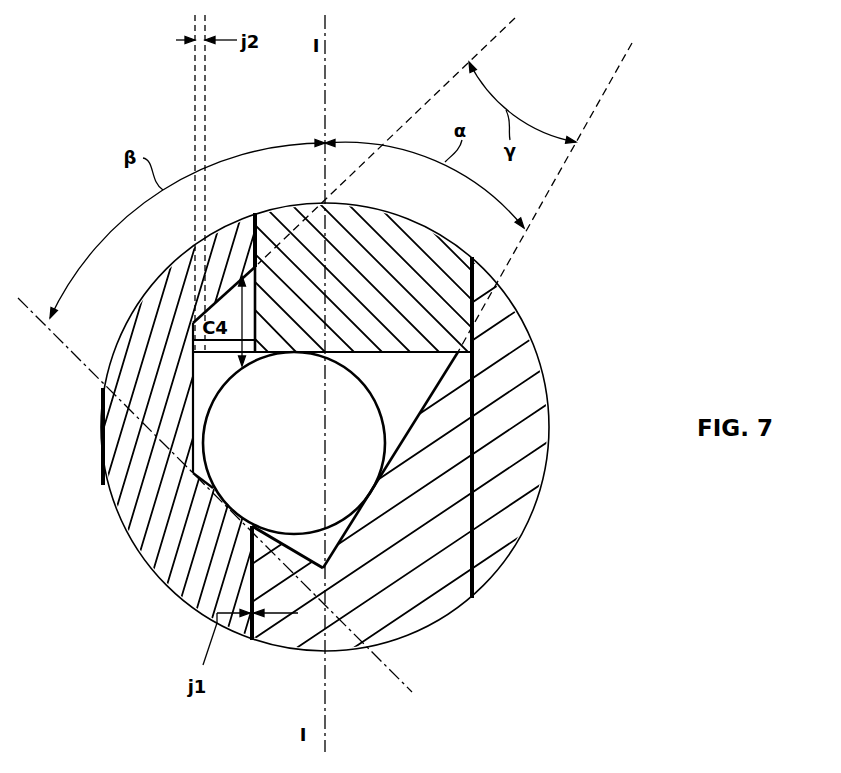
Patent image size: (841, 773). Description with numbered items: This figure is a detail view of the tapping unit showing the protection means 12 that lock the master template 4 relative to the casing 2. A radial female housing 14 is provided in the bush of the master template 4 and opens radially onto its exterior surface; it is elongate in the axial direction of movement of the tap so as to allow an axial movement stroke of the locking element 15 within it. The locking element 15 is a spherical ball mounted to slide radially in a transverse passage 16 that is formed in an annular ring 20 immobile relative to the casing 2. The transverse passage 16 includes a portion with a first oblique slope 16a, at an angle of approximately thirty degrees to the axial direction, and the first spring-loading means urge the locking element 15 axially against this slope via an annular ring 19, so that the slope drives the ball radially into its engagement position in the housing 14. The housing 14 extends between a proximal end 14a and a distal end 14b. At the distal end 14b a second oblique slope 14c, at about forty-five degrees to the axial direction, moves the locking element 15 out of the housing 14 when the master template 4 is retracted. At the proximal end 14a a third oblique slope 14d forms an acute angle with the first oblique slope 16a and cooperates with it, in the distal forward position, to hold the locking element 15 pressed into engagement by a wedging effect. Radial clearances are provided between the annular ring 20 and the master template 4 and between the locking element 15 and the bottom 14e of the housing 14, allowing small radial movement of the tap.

The casing 2 is at (506, 419).
The master template 4 is at (143, 489).
The protection means 12 is at (196, 510).
The radial female housings 14 is at (208, 368).
The proximal end 14a is at (214, 282).
The distal end 14b is at (220, 530).
The second oblique slope 14c is at (370, 650).
The third oblique slope 14d is at (405, 123).
The bottom of the radial female housing 14e is at (192, 413).
The locking elements 15 is at (282, 448).
The transverse passage 16 is at (391, 389).
The first oblique slope 16a is at (516, 260).
The annular ring 19 is at (367, 286).
The annular ring 20 is at (397, 566).